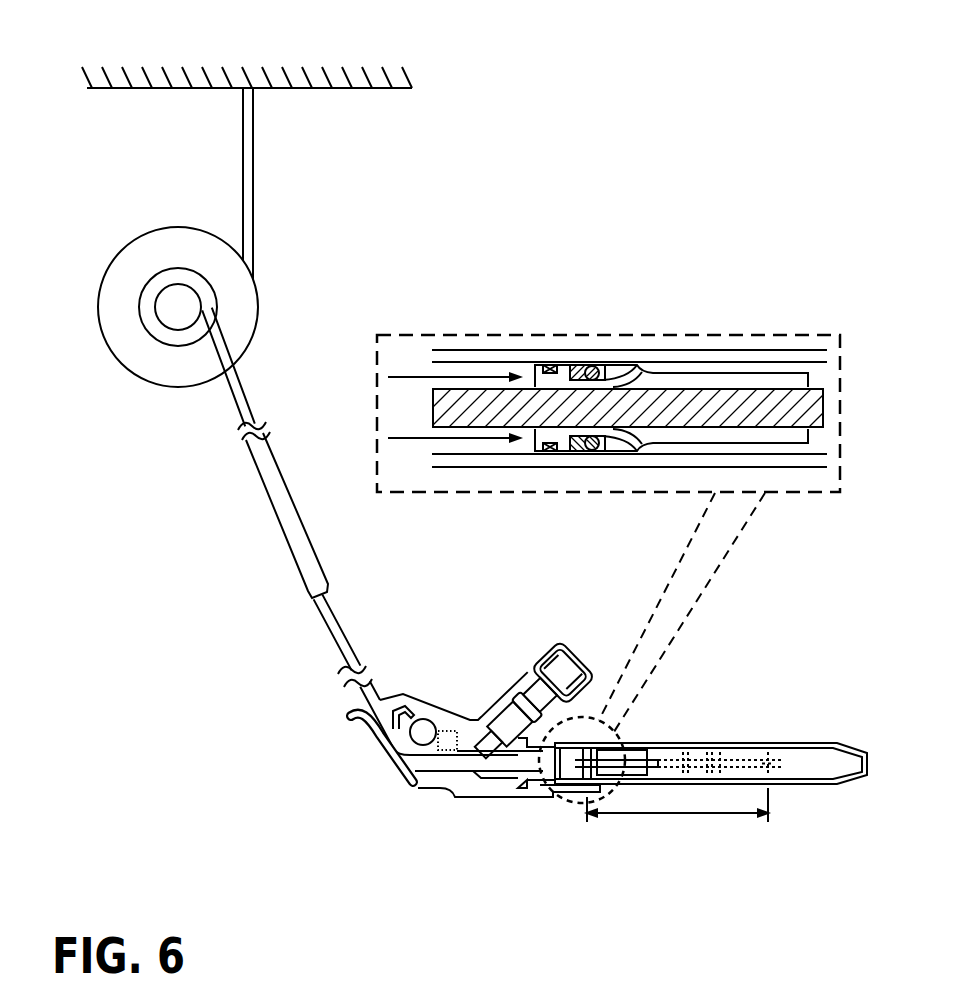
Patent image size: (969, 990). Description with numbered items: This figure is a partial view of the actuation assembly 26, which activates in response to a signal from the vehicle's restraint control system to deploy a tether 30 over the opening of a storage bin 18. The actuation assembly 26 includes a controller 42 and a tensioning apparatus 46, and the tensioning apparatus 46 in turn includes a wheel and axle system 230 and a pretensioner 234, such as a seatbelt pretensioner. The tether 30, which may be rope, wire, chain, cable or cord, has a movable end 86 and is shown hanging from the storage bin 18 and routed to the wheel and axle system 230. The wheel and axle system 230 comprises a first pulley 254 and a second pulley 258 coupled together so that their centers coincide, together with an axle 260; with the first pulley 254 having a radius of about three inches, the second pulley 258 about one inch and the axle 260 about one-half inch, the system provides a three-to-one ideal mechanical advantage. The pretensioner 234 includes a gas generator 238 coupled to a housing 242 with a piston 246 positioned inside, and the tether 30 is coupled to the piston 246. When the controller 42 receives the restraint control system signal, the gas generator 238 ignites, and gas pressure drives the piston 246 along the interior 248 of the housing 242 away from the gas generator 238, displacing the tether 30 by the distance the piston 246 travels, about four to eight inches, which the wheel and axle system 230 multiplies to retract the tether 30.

The storage bin 18 is at (88, 107).
The tether 30 is at (247, 130).
The movable end 86 is at (266, 178).
The wheel and axle system 230 is at (86, 283).
The first pulley 254 is at (192, 243).
The second pulley 258 is at (202, 297).
The axle 260 is at (178, 308).
The actuation assembly 26 is at (714, 176).
The tensioning apparatus 46 is at (336, 748).
The controller 42 is at (447, 750).
The gas generator 238 is at (563, 670).
The housing 242 is at (792, 742).
The interior 248 is at (831, 767).
The pretensioner 234 is at (734, 856).
The piston 246 is at (540, 368).